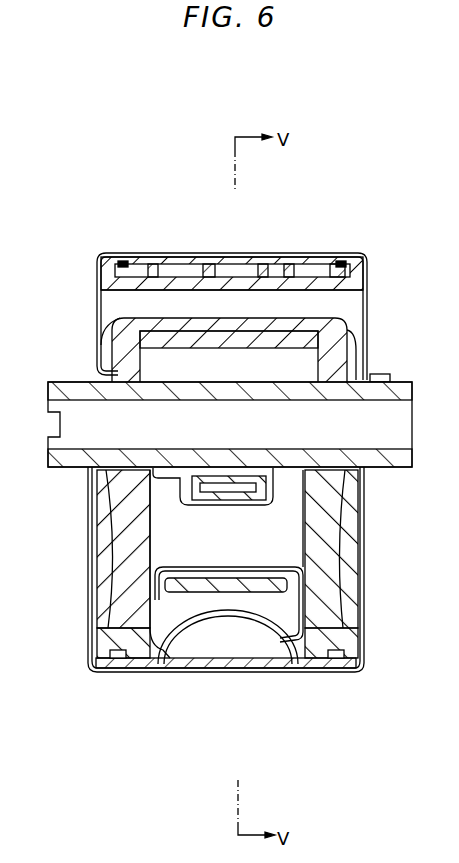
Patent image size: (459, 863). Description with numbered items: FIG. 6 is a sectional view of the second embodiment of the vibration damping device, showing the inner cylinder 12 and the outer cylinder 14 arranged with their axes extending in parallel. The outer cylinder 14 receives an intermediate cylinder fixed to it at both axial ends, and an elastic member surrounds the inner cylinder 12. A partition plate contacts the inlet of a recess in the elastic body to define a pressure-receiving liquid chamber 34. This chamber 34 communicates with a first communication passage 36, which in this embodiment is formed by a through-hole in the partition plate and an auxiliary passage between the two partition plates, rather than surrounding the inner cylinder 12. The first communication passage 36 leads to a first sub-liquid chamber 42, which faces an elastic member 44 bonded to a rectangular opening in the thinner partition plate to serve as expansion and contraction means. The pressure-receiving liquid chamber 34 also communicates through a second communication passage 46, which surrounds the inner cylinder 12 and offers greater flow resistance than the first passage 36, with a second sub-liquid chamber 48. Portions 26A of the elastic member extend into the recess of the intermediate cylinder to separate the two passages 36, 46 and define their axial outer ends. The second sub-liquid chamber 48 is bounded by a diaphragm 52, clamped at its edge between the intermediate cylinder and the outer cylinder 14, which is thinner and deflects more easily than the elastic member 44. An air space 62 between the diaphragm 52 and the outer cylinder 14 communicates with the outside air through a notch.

The inner cylinder 12 is at (388, 382).
The outer cylinder 14 is at (358, 255).
The portions of the elastic member 26A is at (171, 267).
The pressure-receiving liquid chamber 34 is at (181, 541).
The first communication passage 36 is at (268, 585).
The first sub-liquid chamber 42 is at (218, 580).
The elastic member 44 is at (287, 636).
The second communication passage 46 is at (230, 268).
The second sub-liquid chamber 48 is at (320, 643).
The diaphragm 52 is at (187, 638).
The air space 62 is at (250, 652).